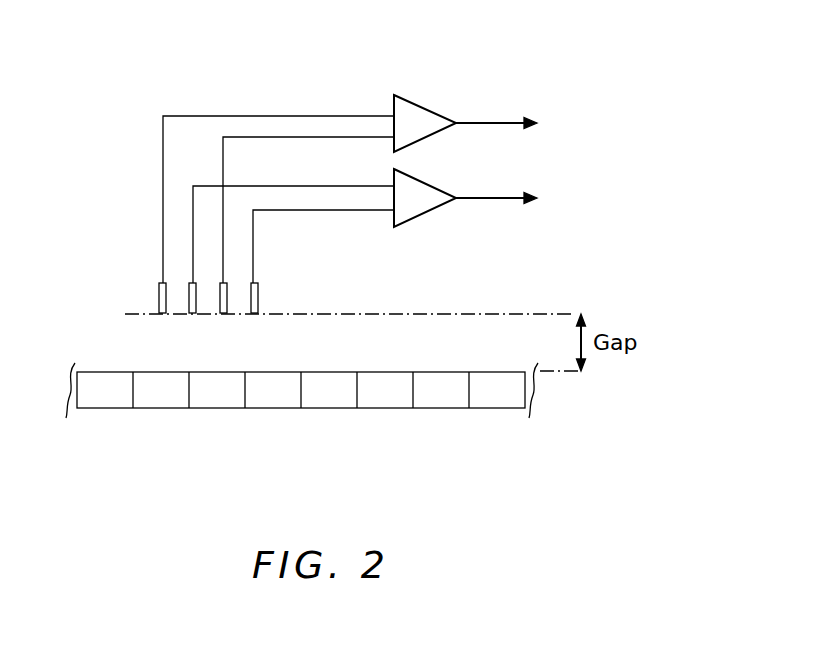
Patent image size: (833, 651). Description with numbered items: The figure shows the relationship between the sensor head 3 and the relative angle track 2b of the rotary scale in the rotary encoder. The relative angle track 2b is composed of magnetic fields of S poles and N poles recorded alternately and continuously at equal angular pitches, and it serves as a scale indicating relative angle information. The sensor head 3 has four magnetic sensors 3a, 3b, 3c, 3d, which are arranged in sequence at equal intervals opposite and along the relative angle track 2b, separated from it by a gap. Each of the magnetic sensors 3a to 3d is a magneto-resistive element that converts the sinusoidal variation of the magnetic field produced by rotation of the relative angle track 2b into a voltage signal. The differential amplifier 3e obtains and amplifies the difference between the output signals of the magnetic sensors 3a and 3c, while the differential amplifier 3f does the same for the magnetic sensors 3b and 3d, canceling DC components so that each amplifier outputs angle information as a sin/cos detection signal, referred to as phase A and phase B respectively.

The sensor head 3 is at (241, 72).
The magnetic sensor 3a is at (160, 295).
The magnetic sensor 3b is at (192, 288).
The magnetic sensor 3c is at (225, 293).
The magnetic sensor 3d is at (255, 302).
The differential amplifier 3e is at (425, 105).
The differential amplifier 3f is at (422, 215).
The relative angle track 2b is at (285, 408).